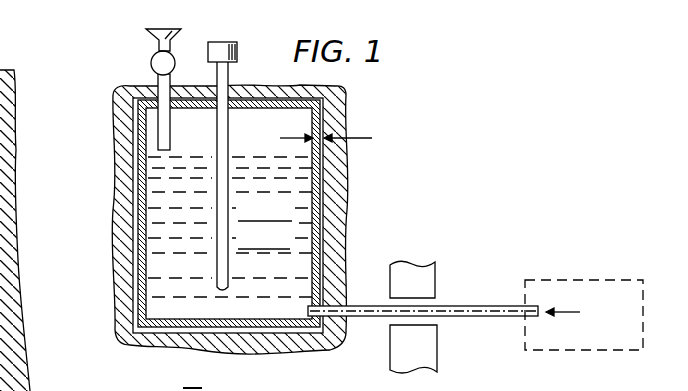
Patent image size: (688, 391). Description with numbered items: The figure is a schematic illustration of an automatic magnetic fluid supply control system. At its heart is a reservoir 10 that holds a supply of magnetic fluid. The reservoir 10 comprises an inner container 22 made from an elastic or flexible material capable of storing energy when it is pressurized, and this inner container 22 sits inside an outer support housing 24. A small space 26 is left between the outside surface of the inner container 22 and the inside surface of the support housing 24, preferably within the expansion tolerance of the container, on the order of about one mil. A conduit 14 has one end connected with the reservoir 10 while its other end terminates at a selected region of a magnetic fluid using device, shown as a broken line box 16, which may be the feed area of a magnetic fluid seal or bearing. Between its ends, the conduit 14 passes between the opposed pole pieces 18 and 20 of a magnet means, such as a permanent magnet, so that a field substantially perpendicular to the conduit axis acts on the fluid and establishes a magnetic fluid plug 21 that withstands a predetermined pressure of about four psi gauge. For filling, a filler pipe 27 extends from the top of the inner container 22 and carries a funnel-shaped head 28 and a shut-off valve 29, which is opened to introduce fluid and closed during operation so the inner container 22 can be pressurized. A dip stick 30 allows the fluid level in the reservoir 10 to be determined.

The reservoir 10 is at (346, 124).
The conduit 14 is at (466, 318).
The magnetic fluid using device 16 is at (600, 279).
The pole piece 18 is at (425, 262).
The pole piece 20 is at (391, 359).
The magnetic fluid plug 21 is at (440, 306).
The inner container 22 is at (322, 216).
The outer support housing 24 is at (136, 150).
The small space 26 is at (363, 140).
The filler pipe 27 is at (170, 126).
The funnel-shaped head 28 is at (143, 33).
The shut-off valve 29 is at (151, 63).
The dip stick 30 is at (229, 72).